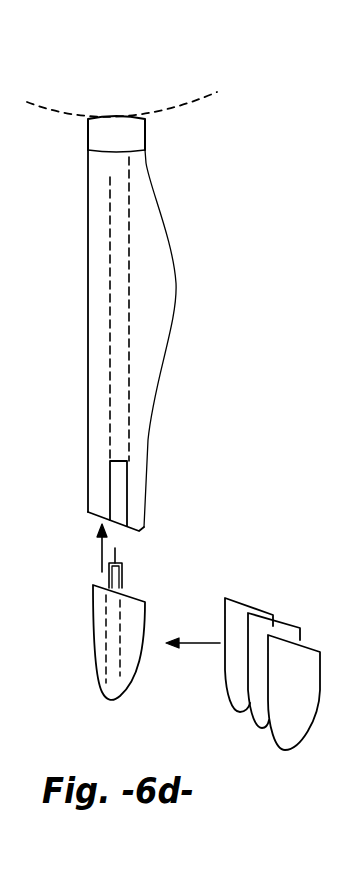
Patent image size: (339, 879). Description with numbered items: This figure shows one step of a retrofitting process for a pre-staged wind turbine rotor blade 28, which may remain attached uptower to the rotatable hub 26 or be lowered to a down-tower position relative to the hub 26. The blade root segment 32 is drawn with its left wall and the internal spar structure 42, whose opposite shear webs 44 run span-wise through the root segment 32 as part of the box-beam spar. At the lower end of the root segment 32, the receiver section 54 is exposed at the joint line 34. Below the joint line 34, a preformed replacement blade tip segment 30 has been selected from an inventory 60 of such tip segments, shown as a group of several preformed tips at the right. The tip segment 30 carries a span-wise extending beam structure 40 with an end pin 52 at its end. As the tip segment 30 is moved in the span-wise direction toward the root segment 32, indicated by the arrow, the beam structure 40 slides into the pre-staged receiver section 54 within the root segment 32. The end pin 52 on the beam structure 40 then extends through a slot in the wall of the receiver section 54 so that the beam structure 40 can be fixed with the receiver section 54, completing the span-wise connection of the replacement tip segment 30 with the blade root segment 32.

The rotatable hub 26 is at (43, 100).
The rotor blade 28 is at (181, 304).
The root-end blade segment 32 is at (87, 212).
The shear web 44 is at (108, 366).
The spar structure 42 is at (140, 383).
The receiver section 54 is at (128, 507).
The joint line 34 is at (98, 518).
The end pin 52 is at (115, 552).
The beam structure 40 is at (123, 582).
The replacement blade tip segment 30 is at (142, 657).
The inventory 60 is at (252, 591).